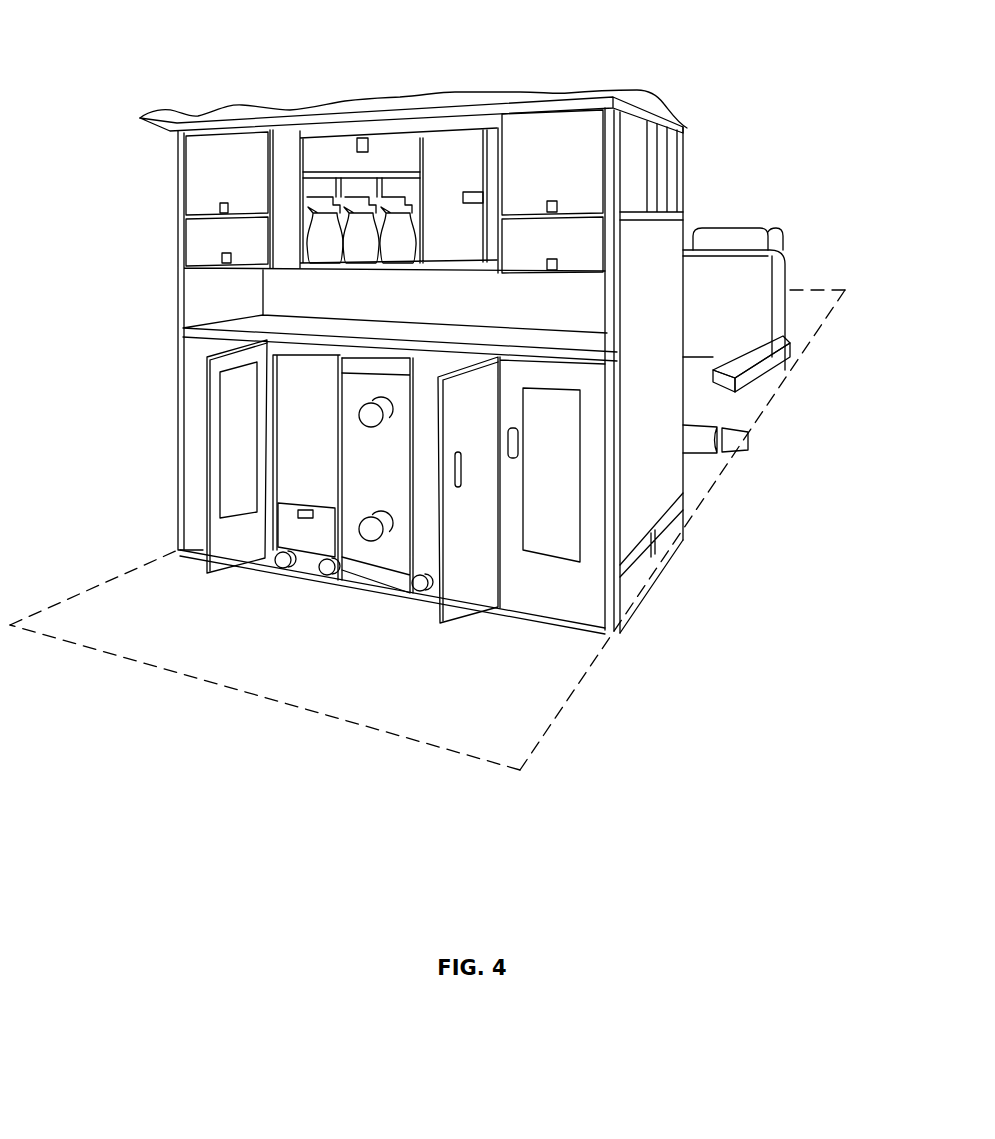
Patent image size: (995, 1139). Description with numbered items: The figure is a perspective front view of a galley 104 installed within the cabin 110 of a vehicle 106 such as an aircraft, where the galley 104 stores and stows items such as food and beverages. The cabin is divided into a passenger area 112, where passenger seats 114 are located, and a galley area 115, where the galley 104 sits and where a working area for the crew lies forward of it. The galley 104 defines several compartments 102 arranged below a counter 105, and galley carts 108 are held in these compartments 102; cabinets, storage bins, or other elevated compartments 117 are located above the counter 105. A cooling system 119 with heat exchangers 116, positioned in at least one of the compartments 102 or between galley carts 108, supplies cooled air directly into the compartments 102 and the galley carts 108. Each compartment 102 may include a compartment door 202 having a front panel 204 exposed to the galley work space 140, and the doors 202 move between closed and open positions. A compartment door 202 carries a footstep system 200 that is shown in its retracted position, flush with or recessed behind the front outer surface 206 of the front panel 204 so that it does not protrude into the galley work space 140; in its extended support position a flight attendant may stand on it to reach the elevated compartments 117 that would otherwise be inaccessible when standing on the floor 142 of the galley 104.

The compartment 102 is at (363, 512).
The galley 104 is at (687, 175).
The counter 105 is at (750, 437).
The vehicle 106 is at (157, 115).
The galley cart 108 is at (317, 493).
The cabin 110 is at (145, 172).
The passenger area 112 is at (838, 310).
The passenger seat 114 is at (777, 335).
The galley area 115 is at (590, 678).
The heat exchanger 116 is at (297, 567).
The elevated compartment 117 is at (227, 157).
The cooling system 119 is at (367, 600).
The galley work space 140 is at (120, 608).
The floor 142 is at (477, 725).
The footstep system 200 is at (240, 418).
The compartment door 202 is at (232, 535).
The front panel 204 is at (215, 525).
The front outer surface 206 is at (588, 608).